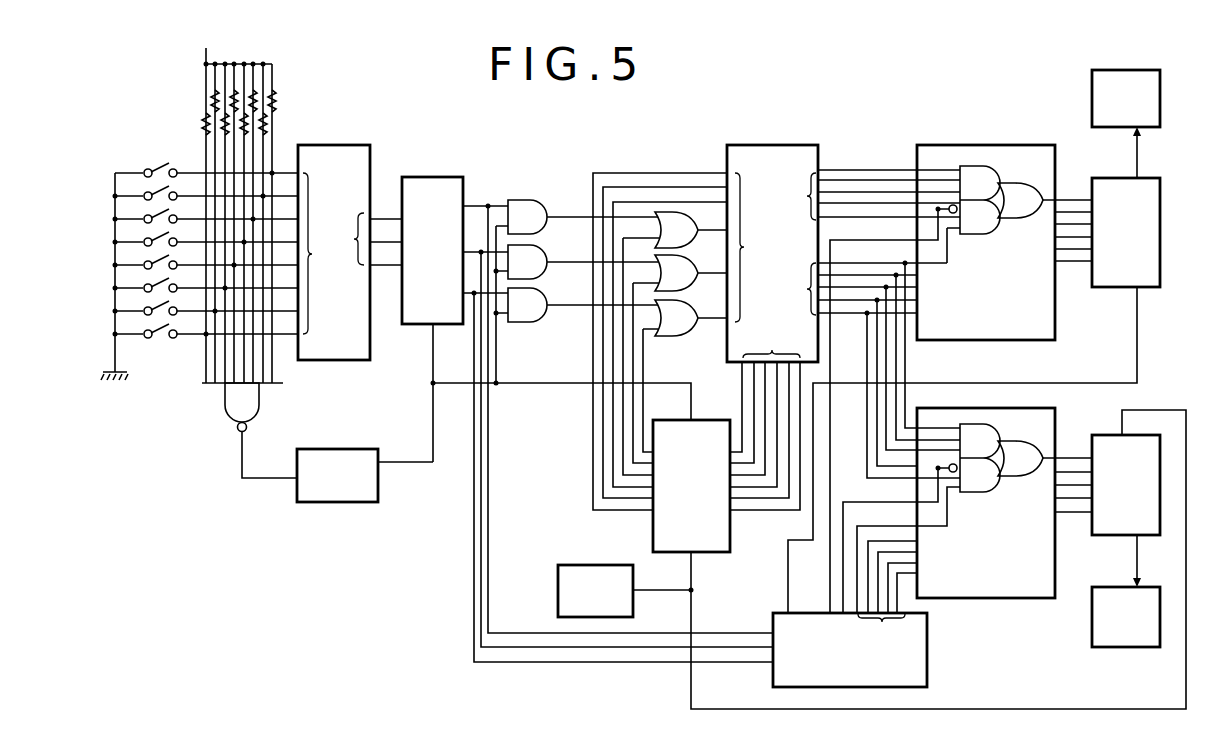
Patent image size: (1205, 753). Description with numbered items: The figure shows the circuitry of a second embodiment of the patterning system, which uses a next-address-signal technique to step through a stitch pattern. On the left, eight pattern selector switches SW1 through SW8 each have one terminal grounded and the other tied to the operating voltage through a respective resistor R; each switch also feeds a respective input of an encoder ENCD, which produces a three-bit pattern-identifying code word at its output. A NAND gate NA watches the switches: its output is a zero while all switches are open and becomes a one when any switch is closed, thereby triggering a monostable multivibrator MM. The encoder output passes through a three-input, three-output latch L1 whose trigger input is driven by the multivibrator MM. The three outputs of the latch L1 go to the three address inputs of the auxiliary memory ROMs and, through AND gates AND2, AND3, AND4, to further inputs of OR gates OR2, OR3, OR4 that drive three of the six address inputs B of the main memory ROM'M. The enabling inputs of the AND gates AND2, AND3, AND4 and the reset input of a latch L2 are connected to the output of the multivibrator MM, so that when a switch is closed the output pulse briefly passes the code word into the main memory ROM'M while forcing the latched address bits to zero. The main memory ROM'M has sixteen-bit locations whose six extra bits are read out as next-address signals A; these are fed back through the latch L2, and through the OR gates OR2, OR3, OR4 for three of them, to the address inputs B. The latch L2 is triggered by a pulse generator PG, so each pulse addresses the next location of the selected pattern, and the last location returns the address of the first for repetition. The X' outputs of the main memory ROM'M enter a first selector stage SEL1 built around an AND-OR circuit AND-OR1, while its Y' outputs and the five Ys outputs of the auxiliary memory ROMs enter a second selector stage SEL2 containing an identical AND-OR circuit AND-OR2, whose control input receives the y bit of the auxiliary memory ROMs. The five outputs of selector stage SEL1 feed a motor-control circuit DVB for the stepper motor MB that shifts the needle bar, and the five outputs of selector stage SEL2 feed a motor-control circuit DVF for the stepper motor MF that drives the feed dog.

The pattern selector switch SW1 is at (163, 164).
The pattern selector switch SW8 is at (165, 339).
The resistor R is at (236, 203).
The encoder ENCD is at (350, 252).
The latch circuit L1 is at (455, 319).
The latch L2 is at (919, 559).
The NAND gate NA is at (261, 430).
The monostable multivibrator MM is at (365, 475).
The AND gate AND2 is at (581, 206).
The AND gate AND3 is at (538, 267).
The AND gate AND4 is at (581, 319).
The OR gate OR2 is at (667, 218).
The OR gate OR3 is at (690, 267).
The OR gate OR4 is at (685, 331).
The main memory ROM'M is at (843, 327).
The auxiliary memory ROMs is at (866, 577).
The selector stage SEL1 is at (1004, 242).
The selector stage SEL2 is at (1004, 503).
The AND-OR circuit AND-OR1 is at (1015, 213).
The AND-OR circuit AND-OR2 is at (1015, 475).
The motor-control circuit DVB is at (974, 370).
The motor-control circuit DVF is at (1126, 511).
The stepper motor MB is at (1126, 98).
The stepper motor MF is at (1126, 617).
The pulse generator PG is at (624, 591).